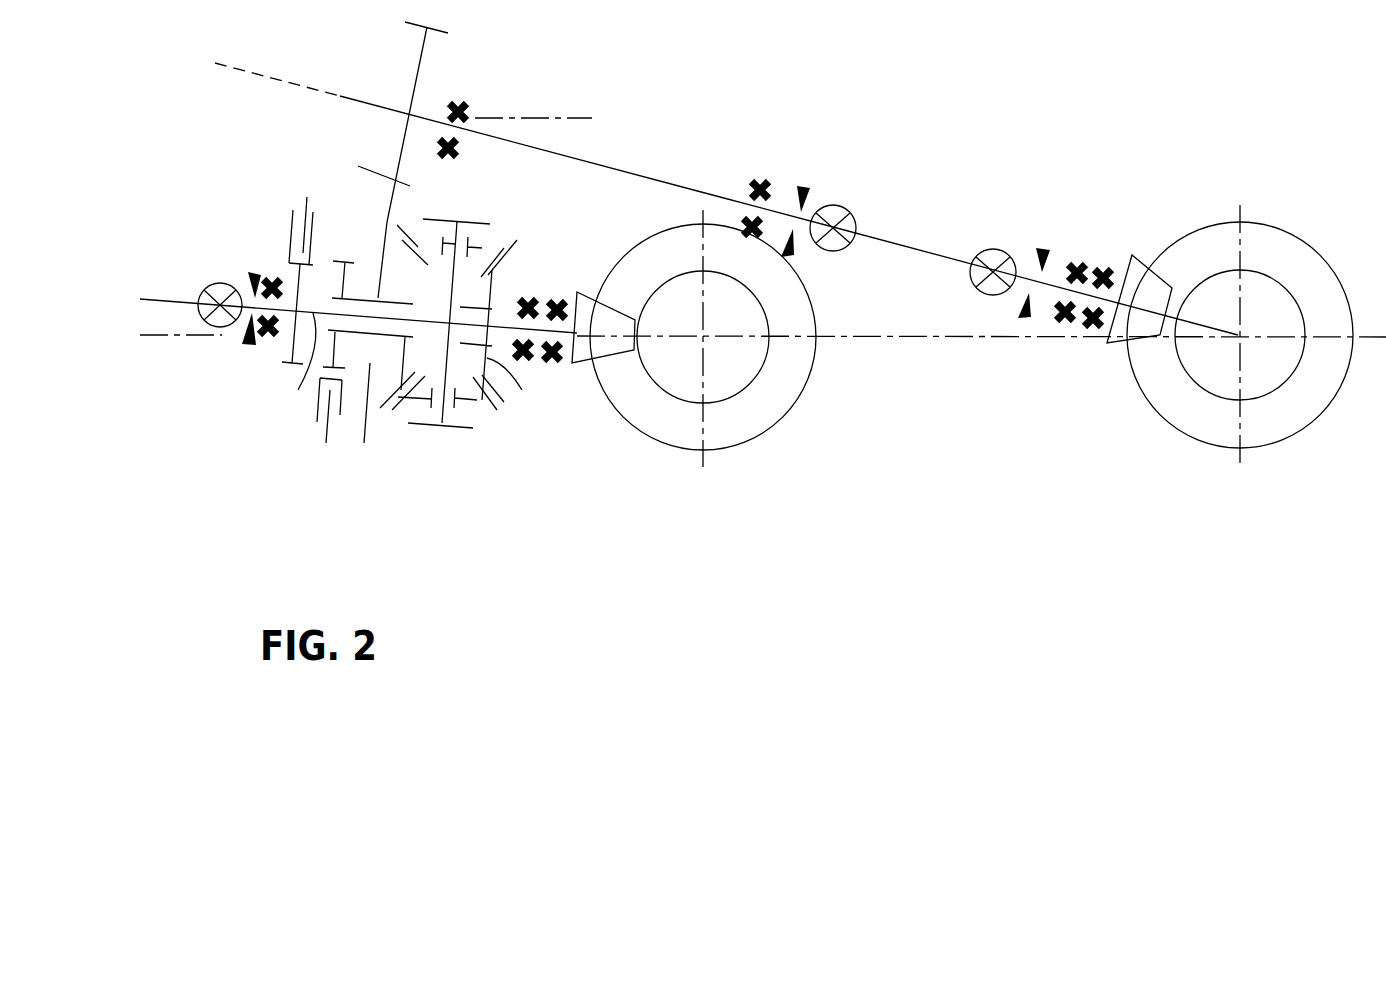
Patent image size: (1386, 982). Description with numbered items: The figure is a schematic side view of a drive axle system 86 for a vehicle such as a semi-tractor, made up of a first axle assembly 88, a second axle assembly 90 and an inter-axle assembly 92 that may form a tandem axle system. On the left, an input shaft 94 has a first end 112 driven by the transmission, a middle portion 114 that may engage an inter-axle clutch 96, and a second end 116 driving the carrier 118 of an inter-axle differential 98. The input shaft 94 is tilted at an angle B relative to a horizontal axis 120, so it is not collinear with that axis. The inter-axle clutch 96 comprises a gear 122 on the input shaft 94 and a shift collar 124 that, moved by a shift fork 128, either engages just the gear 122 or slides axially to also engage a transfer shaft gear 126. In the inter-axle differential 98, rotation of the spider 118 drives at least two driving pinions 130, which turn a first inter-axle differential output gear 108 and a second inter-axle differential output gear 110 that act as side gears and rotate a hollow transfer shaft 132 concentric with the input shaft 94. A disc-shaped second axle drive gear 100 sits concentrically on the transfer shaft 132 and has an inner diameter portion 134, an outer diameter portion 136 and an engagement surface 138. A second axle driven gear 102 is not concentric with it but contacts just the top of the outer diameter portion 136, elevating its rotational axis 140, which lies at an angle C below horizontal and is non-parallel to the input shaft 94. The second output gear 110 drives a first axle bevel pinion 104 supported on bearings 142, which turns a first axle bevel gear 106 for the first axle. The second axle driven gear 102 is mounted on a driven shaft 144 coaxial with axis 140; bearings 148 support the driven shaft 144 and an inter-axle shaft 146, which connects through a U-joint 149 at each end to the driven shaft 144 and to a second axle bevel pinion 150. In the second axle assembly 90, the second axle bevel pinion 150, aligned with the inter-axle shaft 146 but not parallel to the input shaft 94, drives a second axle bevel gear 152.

The drive axle system 86 is at (806, 114).
The first axle assembly 88 is at (475, 510).
The second axle assembly 90 is at (1154, 453).
The inter-axle assembly 92 is at (673, 156).
The input shaft 94 is at (228, 289).
The inter-axle clutch 96 is at (317, 442).
The inter-axle differential 98 is at (452, 452).
The second axle drive gear 100 is at (433, 207).
The second axle driven gear 102 is at (414, 58).
The first axle bevel pinion 104 is at (577, 365).
The first axle bevel gear 106 is at (667, 448).
The first inter-axle differential output gear 108 is at (405, 345).
The second inter-axle differential output gear 110 is at (517, 380).
The first end 112 is at (255, 243).
The middle portion 114 is at (265, 364).
The second end 116 is at (340, 455).
The carrier 118 is at (452, 268).
The horizontal axis 120 is at (923, 338).
The gear 122 is at (283, 232).
The shift collar 124 is at (293, 206).
The transfer shaft gear 126 is at (322, 257).
The shift fork 128 is at (308, 194).
The driving pinions 130 is at (487, 247).
The transfer shaft 132 is at (316, 345).
The inner diameter portion 134 is at (376, 290).
The outer diameter portion 136 is at (392, 204).
The engagement surface 138 is at (359, 165).
The rotational axis 140 is at (273, 82).
The bearings 142 is at (559, 296).
The driven shaft 144 is at (603, 168).
The inter-axle shaft 146 is at (911, 245).
The bearings 148 is at (455, 98).
The U-joint 149 is at (833, 205).
The second axle bevel pinion 150 is at (1110, 345).
The second axle bevel gear 152 is at (1281, 443).
The angle B is at (165, 255).
The angle C is at (522, 73).